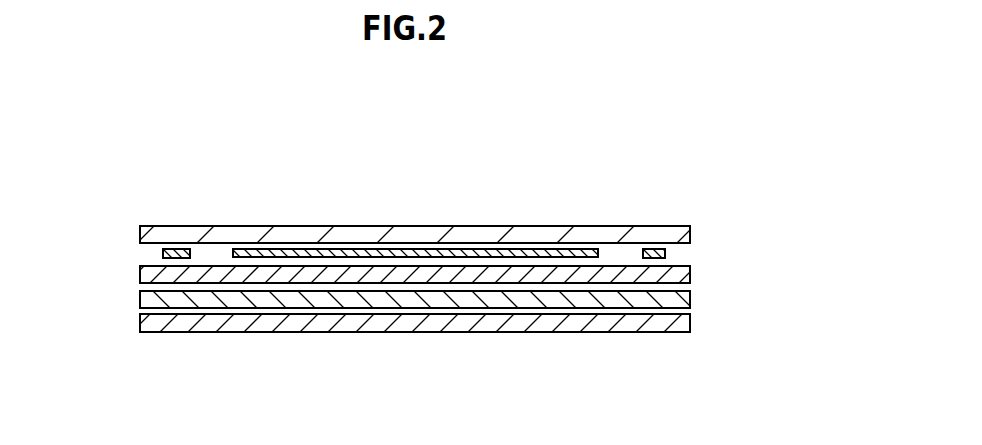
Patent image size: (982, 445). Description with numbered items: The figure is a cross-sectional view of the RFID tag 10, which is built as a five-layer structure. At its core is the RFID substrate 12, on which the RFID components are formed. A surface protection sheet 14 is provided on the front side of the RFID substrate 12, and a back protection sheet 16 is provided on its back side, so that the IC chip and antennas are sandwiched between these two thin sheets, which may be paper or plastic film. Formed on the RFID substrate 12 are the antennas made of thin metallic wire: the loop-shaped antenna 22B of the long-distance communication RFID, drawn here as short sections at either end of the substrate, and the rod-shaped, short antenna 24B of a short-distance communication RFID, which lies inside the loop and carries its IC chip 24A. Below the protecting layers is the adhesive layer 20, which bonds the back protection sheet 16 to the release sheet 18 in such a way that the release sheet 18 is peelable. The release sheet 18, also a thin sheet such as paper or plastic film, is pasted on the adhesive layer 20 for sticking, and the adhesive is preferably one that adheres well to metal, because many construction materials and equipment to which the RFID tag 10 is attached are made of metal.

The RFID tag 10 is at (689, 160).
The RFID substrate 12 is at (496, 248).
The surface protection sheet 14 is at (690, 229).
The back protection sheet 16 is at (690, 266).
The release sheet 18 is at (690, 318).
The adhesive layer 20 is at (690, 292).
The loop-shaped antenna 22B is at (163, 254).
The IC chip 24A is at (417, 247).
The rod-shaped short antenna 24B is at (272, 249).